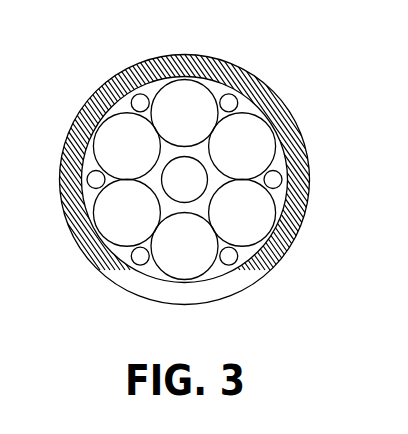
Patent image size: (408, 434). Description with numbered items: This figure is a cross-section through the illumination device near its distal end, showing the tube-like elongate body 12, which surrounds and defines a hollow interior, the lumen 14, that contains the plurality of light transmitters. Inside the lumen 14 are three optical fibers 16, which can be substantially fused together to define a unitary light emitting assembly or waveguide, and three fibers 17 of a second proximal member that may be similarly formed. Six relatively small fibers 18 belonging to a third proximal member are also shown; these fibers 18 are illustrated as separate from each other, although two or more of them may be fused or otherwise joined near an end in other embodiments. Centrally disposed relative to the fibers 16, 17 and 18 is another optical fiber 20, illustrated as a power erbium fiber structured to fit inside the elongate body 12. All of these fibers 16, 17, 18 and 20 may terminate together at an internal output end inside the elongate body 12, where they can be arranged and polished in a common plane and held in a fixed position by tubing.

The elongate body 12 is at (145, 63).
The lumen 14 is at (183, 180).
The optical fibers 16 is at (188, 100).
The fibers 17 is at (113, 133).
The fibers 18 is at (115, 78).
The optical fiber 20 is at (204, 153).